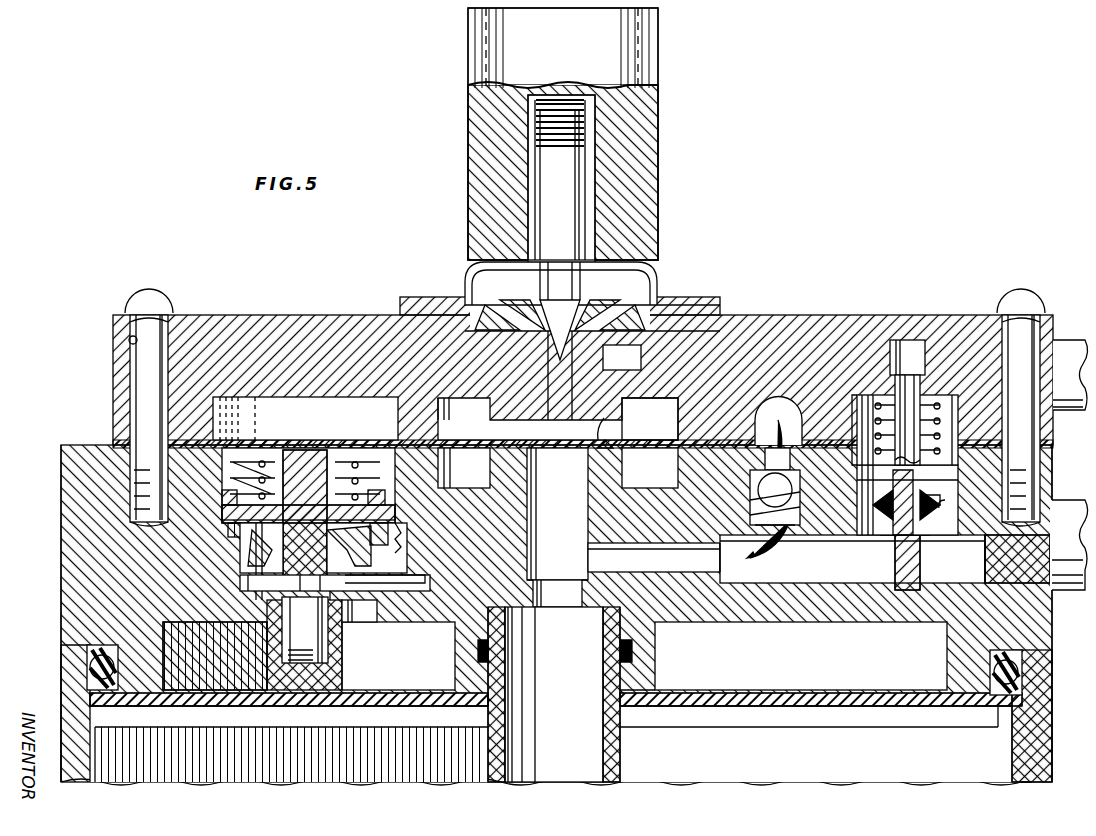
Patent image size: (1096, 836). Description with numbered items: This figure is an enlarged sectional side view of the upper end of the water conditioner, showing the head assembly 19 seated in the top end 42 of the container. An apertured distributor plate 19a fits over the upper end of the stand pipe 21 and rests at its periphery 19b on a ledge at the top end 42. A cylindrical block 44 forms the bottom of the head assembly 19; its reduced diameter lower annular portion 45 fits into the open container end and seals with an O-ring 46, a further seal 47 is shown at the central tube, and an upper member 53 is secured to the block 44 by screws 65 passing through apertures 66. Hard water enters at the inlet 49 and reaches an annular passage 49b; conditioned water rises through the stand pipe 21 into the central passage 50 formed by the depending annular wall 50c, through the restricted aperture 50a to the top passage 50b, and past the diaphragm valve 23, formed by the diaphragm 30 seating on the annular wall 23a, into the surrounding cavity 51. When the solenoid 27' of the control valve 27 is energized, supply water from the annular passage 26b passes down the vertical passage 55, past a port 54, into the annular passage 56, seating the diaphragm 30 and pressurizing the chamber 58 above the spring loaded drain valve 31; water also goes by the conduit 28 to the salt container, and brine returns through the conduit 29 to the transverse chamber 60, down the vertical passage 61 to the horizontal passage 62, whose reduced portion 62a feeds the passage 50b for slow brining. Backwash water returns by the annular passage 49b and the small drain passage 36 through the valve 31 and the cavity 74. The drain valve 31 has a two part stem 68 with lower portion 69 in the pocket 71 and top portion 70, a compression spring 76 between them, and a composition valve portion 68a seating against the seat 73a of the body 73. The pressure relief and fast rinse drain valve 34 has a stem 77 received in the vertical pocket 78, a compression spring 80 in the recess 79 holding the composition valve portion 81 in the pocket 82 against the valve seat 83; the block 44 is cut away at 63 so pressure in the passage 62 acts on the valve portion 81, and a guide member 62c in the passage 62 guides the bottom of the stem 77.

The head assembly 19 is at (58, 473).
The apertured distributor plate 19a is at (805, 698).
The periphery of distributor plate 19b is at (1010, 700).
The stand pipe 21 is at (488, 752).
The diaphragm actuated valve 23 is at (650, 419).
The upstanding annular wall 23a is at (602, 448).
The annular passage 26b is at (642, 352).
The solenoid actuated control valve 27 is at (592, 311).
The solenoid 27' is at (535, 136).
The conduit 28 is at (1062, 350).
The conduit 29 is at (762, 478).
The diaphragm 30 is at (464, 468).
The spring loaded drain valve 31 is at (260, 553).
The spring loaded pressure relief and fast rinse drain valve 34 is at (872, 500).
The vertical drain passage 36 is at (365, 610).
The top end of container 42 is at (90, 690).
The cylindrical block 44 is at (61, 496).
The reduced diameter lower annular portion 45 is at (143, 663).
The O-ring 46 is at (100, 663).
The O-ring seal 47 is at (628, 655).
The hard water inlet 49 is at (1070, 587).
The annular passage 49b is at (644, 656).
The central passage 50 is at (618, 625).
The restricted aperture 50a is at (557, 582).
The top passage 50b is at (588, 505).
The depending annular wall 50c is at (632, 665).
The annular surrounding cavity 51 is at (635, 470).
The upper member 53 is at (120, 368).
The port 54 is at (622, 356).
The vertical passage 55 is at (565, 418).
The annular passage 56 is at (457, 413).
The pressure chamber 58 is at (305, 418).
The transverse chamber 60 is at (758, 411).
The vertical passage 61 is at (752, 491).
The horizontal passage 62 is at (772, 570).
The reduced in diameter portion 62a is at (655, 560).
The guide member 62c is at (905, 572).
The cut away 63 is at (955, 525).
The screws 65 is at (150, 302).
The apertures 66 is at (130, 340).
The two part stem 68 is at (360, 588).
The composition valve portion 68a is at (345, 553).
The lower portion of stem 69 is at (305, 634).
The top portion of stem 70 is at (345, 445).
The pocket 71 is at (295, 657).
The body portion of valve 73 is at (222, 511).
The seat 73a is at (230, 532).
The enlarged circular cavity 74 is at (224, 472).
The compression spring 76 is at (358, 478).
The stem 77 is at (905, 378).
The vertical pocket 78 is at (925, 353).
The enlarged circular recess 79 is at (953, 414).
The compression spring 80 is at (862, 418).
The composition valve portion 81 is at (942, 490).
The pocket 82 is at (948, 472).
The valve seat 83 is at (950, 505).